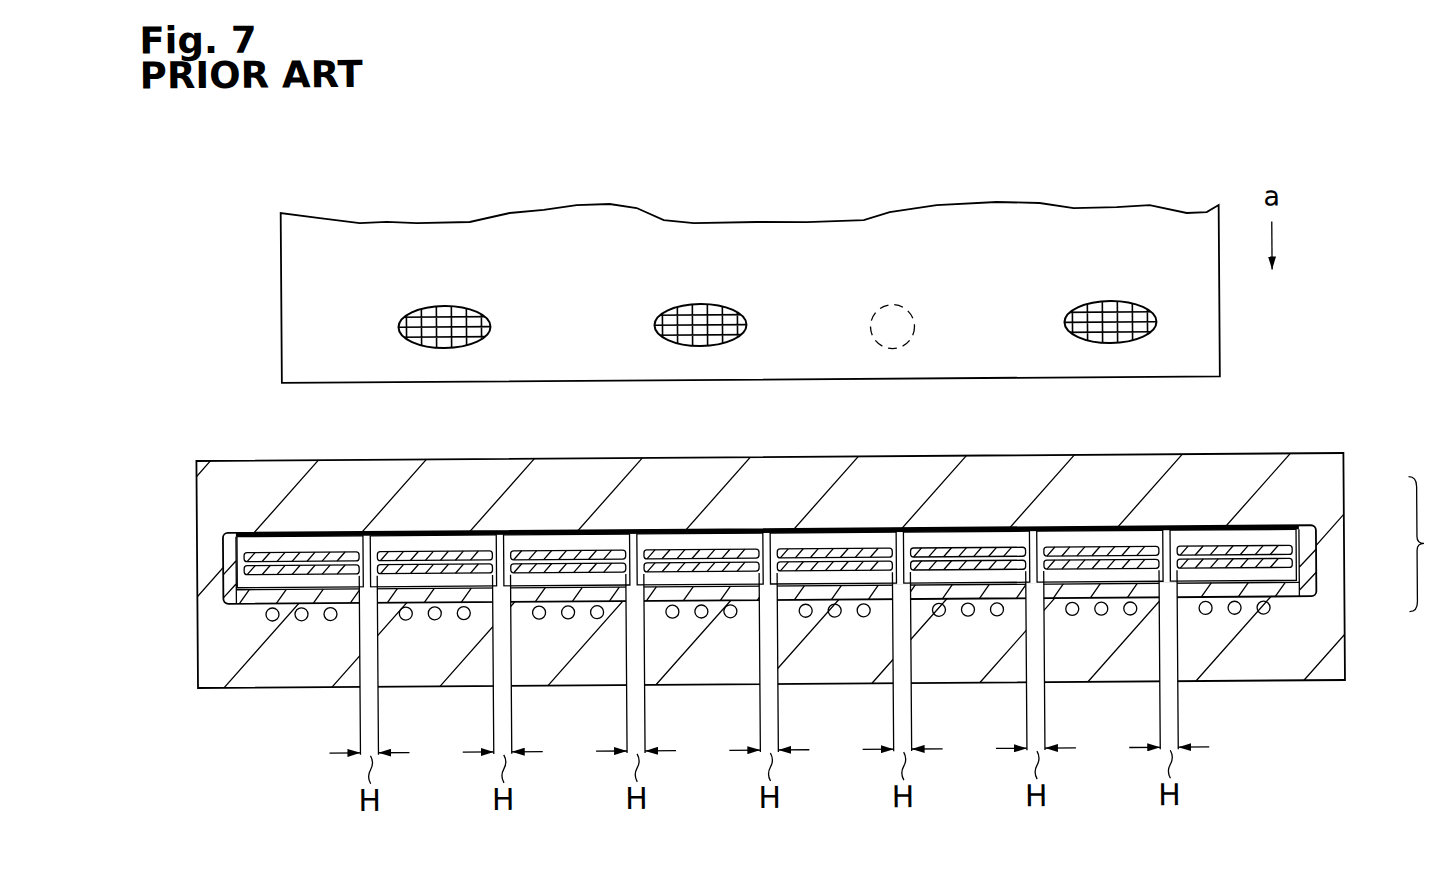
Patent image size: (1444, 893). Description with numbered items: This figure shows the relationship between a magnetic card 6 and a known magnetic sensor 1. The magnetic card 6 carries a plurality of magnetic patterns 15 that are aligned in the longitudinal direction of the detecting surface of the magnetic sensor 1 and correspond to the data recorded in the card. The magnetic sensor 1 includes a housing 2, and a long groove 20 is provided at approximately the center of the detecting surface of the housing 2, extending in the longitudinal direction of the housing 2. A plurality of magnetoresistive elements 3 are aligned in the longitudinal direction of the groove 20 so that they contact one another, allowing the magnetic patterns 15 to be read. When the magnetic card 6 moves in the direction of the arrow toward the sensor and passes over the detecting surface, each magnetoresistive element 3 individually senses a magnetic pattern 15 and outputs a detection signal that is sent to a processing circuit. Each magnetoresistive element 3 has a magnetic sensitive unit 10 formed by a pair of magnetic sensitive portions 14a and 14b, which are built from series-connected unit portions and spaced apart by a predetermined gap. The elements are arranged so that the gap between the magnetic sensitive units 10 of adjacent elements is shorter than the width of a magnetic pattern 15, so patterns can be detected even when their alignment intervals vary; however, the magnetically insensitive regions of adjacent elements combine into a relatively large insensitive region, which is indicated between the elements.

The magnetic sensor 1 is at (203, 450).
The housing 2 is at (1297, 666).
The magnetoresistive elements 3 is at (313, 527).
The magnetic card 6 is at (295, 291).
The magnetic sensitive unit 10 is at (1426, 543).
The magnetic sensitive portion 14a is at (1288, 534).
The magnetic sensitive portion 14b is at (1290, 590).
The magnetic patterns 15 is at (421, 312).
The long groove 20 is at (247, 606).